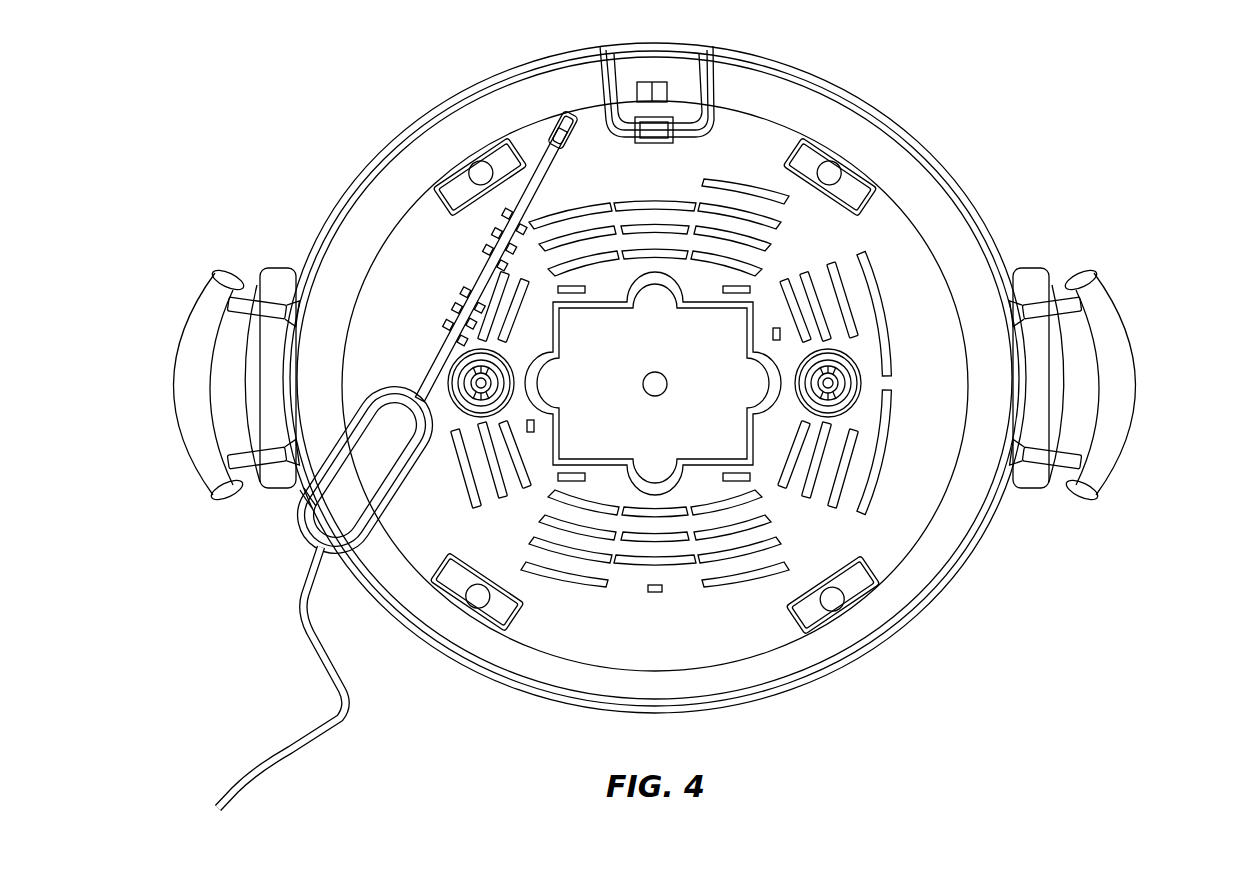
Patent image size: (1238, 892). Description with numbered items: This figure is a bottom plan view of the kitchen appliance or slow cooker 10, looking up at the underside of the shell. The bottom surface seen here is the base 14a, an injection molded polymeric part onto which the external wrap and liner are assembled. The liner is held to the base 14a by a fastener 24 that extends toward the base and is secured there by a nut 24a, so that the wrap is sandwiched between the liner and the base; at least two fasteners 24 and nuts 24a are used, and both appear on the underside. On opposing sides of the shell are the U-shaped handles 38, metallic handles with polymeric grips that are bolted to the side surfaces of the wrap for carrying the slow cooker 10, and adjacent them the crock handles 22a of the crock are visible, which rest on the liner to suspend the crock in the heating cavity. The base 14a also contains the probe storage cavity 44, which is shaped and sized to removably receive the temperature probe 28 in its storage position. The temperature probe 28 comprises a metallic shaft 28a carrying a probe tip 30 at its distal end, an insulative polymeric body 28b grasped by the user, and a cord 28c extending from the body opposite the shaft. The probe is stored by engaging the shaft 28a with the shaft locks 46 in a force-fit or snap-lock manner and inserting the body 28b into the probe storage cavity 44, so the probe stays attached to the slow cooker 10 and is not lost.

The slow cooker 10 is at (372, 103).
The base 14a is at (808, 102).
The crock handles 22a is at (283, 278).
The fastener 24 is at (845, 380).
The nut 24a is at (497, 380).
The temperature probe 28 is at (296, 517).
The shaft 28a is at (482, 262).
The body 28b is at (340, 518).
The cord 28c is at (350, 703).
The probe tip 30 is at (557, 128).
The U-shaped handles 38 is at (182, 372).
The probe storage cavity 44 is at (303, 495).
The shaft locks 46 is at (460, 297).